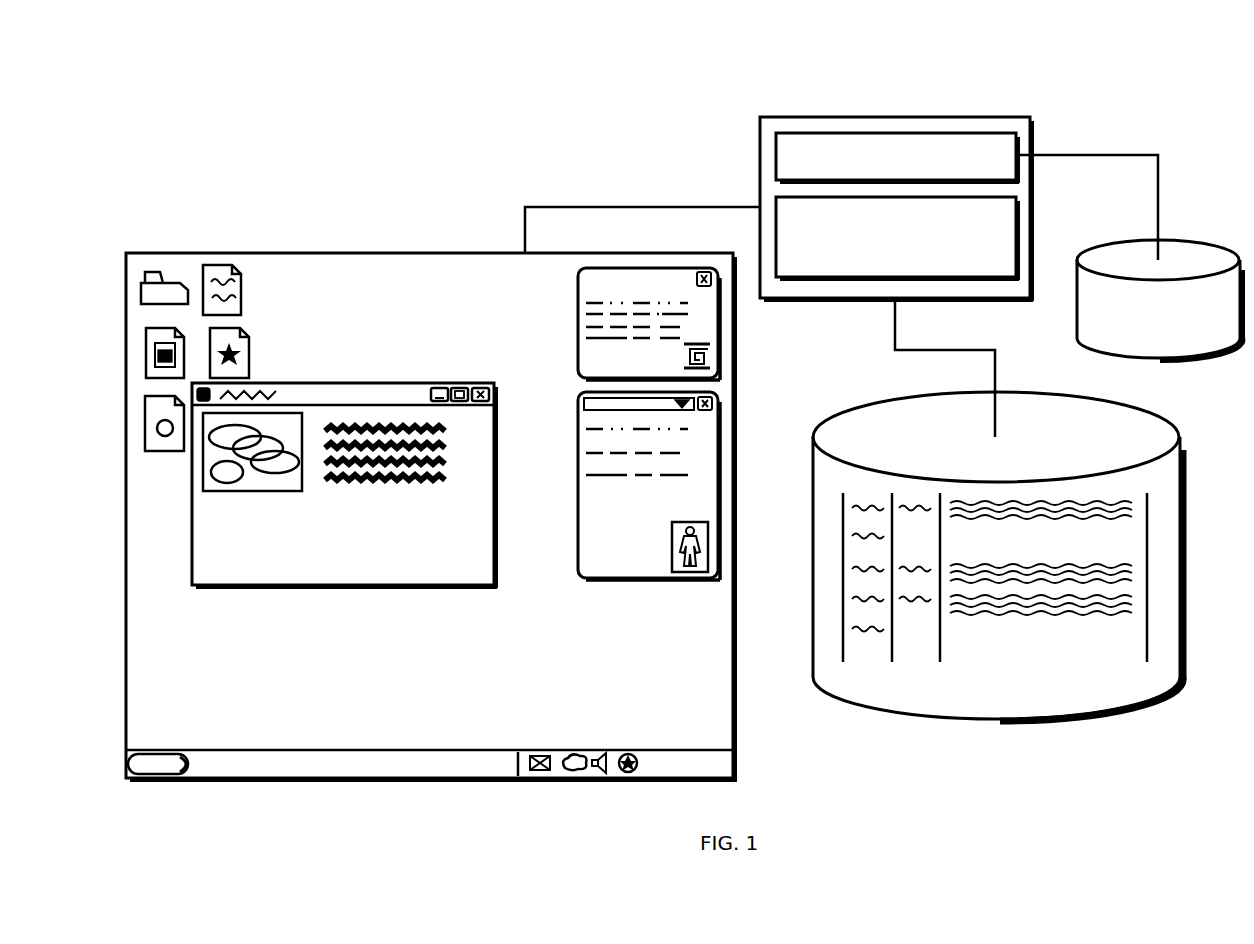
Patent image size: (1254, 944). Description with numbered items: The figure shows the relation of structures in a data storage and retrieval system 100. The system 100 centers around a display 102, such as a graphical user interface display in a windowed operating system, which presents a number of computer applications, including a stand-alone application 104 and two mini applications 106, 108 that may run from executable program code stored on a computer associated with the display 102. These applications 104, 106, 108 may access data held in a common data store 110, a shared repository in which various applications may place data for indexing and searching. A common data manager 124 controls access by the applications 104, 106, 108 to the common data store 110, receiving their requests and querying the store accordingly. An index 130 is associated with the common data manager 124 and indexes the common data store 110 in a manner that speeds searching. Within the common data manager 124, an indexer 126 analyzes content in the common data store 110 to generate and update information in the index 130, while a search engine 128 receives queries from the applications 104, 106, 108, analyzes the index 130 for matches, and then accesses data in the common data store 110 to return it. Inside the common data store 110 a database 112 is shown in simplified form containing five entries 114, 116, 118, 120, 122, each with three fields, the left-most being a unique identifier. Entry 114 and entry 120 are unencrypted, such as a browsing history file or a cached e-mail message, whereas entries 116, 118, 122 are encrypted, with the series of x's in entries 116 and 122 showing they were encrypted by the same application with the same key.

The data storage and retrieval system 100 is at (203, 166).
The display 102 is at (192, 253).
The stand-alone application 104 is at (192, 573).
The mini application 106 is at (718, 325).
The mini application 108 is at (718, 480).
The common data store 110 is at (1145, 432).
The database 112 is at (858, 548).
The entry 114 is at (1137, 513).
The entry 116 is at (1137, 541).
The entry 118 is at (1137, 575).
The entry 120 is at (1137, 605).
The entry 122 is at (1137, 633).
The common data manager 124 is at (1034, 130).
The indexer 126 is at (930, 131).
The search engine 128 is at (830, 280).
The index 130 is at (1193, 255).